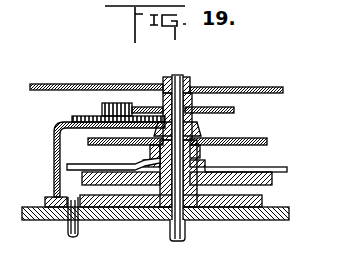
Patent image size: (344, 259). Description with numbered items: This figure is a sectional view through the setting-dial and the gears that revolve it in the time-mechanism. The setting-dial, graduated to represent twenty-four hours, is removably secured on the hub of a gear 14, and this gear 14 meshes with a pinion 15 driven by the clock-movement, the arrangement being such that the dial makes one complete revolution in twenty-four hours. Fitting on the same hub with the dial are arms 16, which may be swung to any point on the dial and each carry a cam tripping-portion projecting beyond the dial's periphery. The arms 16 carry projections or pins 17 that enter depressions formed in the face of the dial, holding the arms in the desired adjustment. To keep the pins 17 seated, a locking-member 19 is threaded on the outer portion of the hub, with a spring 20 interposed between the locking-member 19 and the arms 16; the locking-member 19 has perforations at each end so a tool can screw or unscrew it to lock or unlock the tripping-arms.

The gear 14 is at (252, 202).
The pinion 15 is at (52, 199).
The arms 16 is at (68, 165).
The pins 17 is at (104, 177).
The locking-member 19 is at (229, 140).
The spring 20 is at (201, 153).